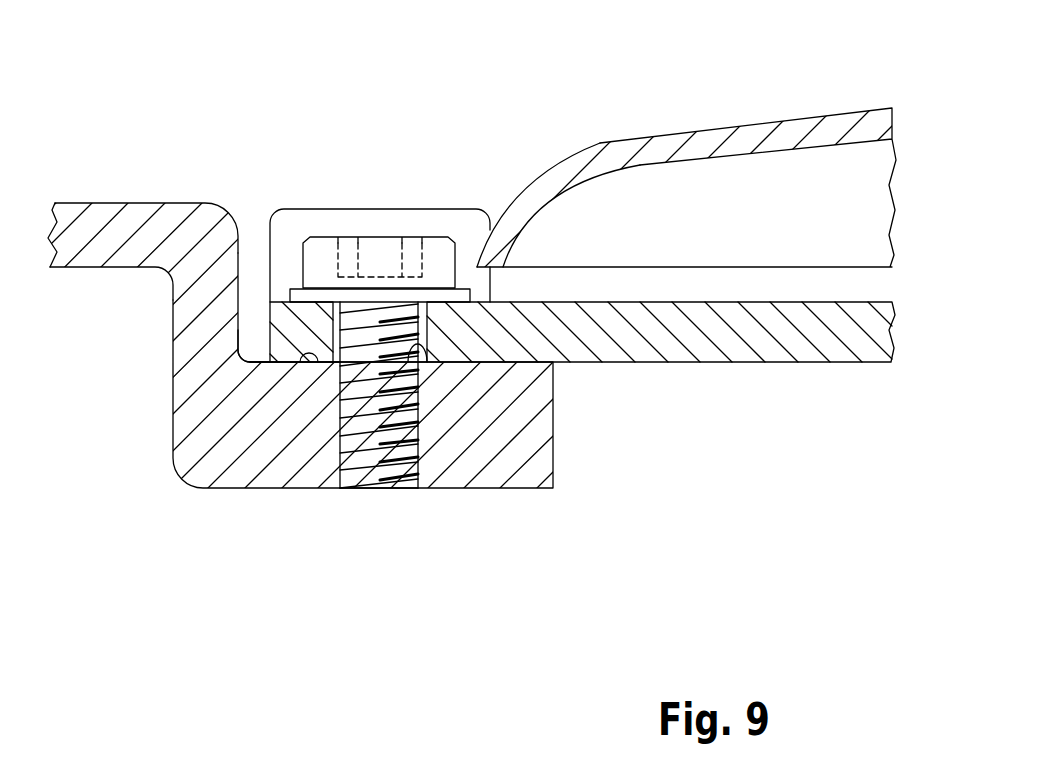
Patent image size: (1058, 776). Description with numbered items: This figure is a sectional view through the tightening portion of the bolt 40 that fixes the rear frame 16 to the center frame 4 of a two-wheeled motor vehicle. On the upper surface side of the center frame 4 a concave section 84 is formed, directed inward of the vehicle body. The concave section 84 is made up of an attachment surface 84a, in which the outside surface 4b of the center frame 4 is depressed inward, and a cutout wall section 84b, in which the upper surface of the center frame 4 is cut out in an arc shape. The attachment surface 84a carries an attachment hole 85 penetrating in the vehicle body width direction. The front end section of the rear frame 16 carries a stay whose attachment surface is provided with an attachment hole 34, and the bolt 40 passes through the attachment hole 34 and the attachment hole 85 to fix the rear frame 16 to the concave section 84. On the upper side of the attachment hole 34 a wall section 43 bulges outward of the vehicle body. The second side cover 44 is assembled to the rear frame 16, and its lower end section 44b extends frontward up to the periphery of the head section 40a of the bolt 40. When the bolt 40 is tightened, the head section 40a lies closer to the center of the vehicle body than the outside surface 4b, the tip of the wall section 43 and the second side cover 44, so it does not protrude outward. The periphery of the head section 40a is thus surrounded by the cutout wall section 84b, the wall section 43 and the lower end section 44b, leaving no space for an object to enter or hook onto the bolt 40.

The center frame 4 is at (141, 203).
The outside surface 4b is at (77, 203).
The concave section 84 is at (238, 253).
The attachment surface 84a is at (301, 363).
The cutout wall section 84b is at (231, 321).
The rear frame 16 is at (668, 348).
The wall section 43 is at (472, 207).
The second side cover 44 is at (837, 105).
The lower end section 44b is at (567, 155).
The bolt 40 is at (387, 417).
The head section 40a is at (378, 250).
The attachment hole 85 is at (355, 488).
The attachment hole 34 is at (420, 352).